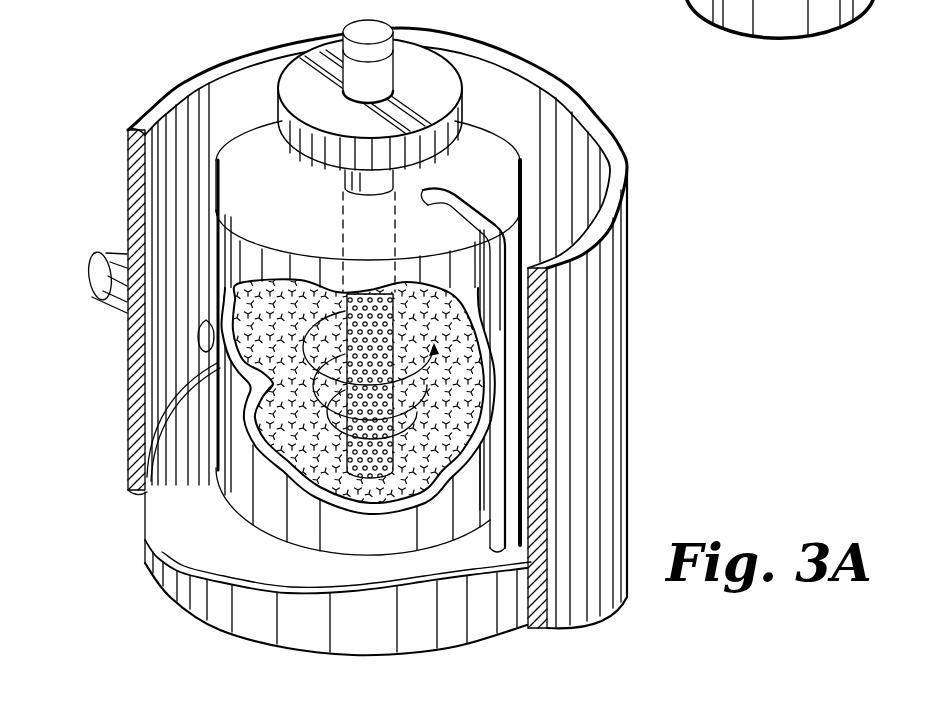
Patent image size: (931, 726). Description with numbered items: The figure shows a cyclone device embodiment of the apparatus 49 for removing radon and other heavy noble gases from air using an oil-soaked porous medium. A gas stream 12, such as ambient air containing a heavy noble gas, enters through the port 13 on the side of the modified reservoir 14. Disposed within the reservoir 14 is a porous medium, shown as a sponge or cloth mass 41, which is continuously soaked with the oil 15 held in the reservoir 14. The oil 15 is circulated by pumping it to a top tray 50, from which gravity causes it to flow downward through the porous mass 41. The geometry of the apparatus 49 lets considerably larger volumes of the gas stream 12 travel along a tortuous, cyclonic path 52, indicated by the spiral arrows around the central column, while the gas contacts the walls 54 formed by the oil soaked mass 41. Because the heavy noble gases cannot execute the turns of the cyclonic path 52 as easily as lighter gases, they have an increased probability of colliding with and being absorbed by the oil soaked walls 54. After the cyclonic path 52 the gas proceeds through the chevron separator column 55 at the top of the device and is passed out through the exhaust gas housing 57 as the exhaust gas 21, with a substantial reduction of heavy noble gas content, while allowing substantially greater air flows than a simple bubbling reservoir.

The gas stream 12 is at (75, 267).
The port 13 is at (103, 297).
The reservoir 14 is at (197, 518).
The oil 15 is at (390, 571).
The exhaust gas 21 is at (255, 72).
The sponge or cloth mass 41 is at (320, 462).
The apparatus 49 is at (120, 100).
The top tray 50 is at (483, 147).
The cyclonic path 52 is at (430, 433).
The walls 54 is at (262, 394).
The chevron separator column 55 is at (347, 182).
The exhaust gas housing 57 is at (430, 83).